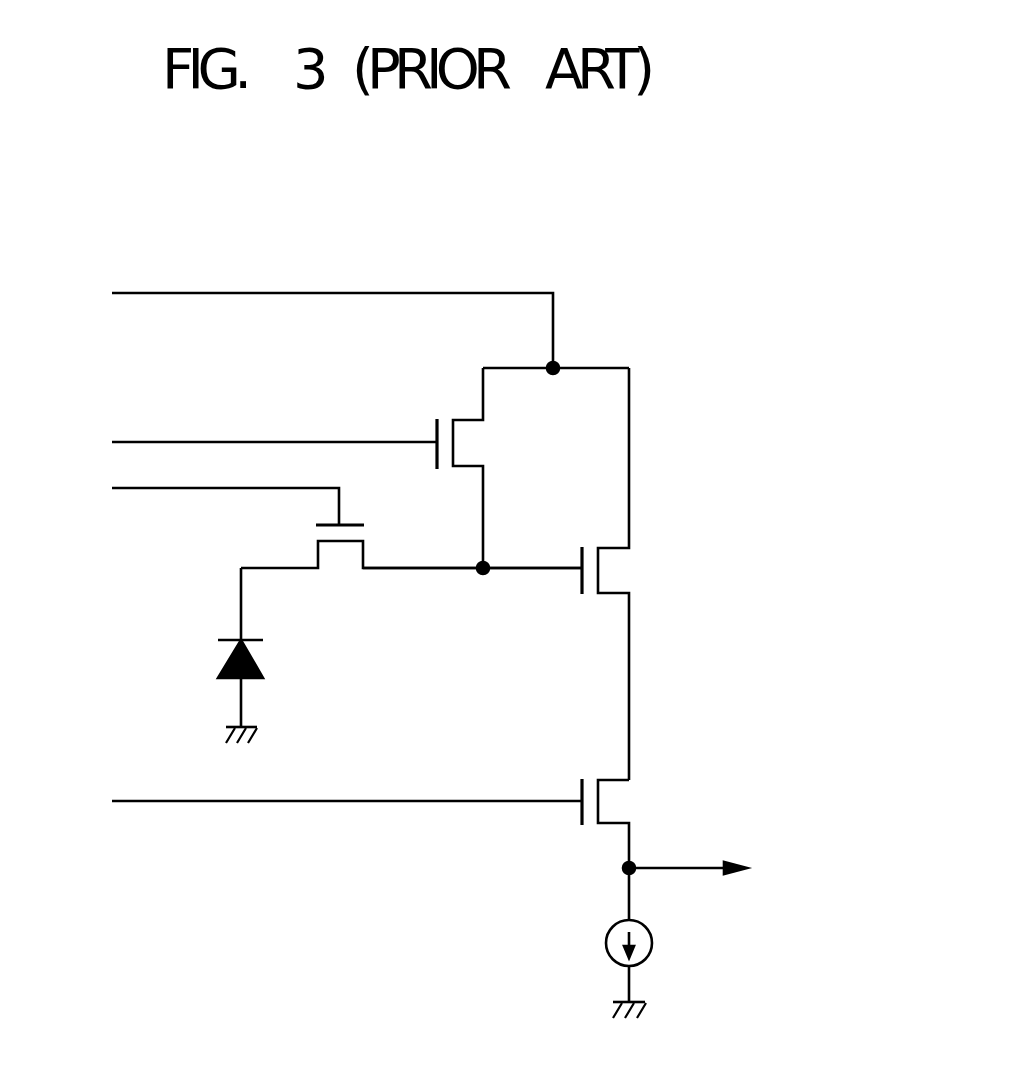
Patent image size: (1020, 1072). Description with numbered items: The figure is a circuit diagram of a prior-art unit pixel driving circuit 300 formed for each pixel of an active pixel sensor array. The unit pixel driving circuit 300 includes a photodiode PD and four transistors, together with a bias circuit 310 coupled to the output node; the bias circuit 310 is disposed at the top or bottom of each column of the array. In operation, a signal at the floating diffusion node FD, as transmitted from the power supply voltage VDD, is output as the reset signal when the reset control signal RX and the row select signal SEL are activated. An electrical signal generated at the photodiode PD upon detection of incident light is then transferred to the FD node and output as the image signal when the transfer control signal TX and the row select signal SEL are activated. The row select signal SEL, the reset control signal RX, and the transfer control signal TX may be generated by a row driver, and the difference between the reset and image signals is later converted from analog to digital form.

The unit pixel driving circuit 300 is at (725, 302).
The bias circuit 310 is at (652, 943).
The photodiode PD is at (267, 655).
The floating diffusion node FD is at (483, 575).
The transfer control signal TX is at (323, 518).
The reset control signal RX is at (272, 468).
The row select signal SEL is at (336, 849).
The power supply voltage VDD is at (333, 323).